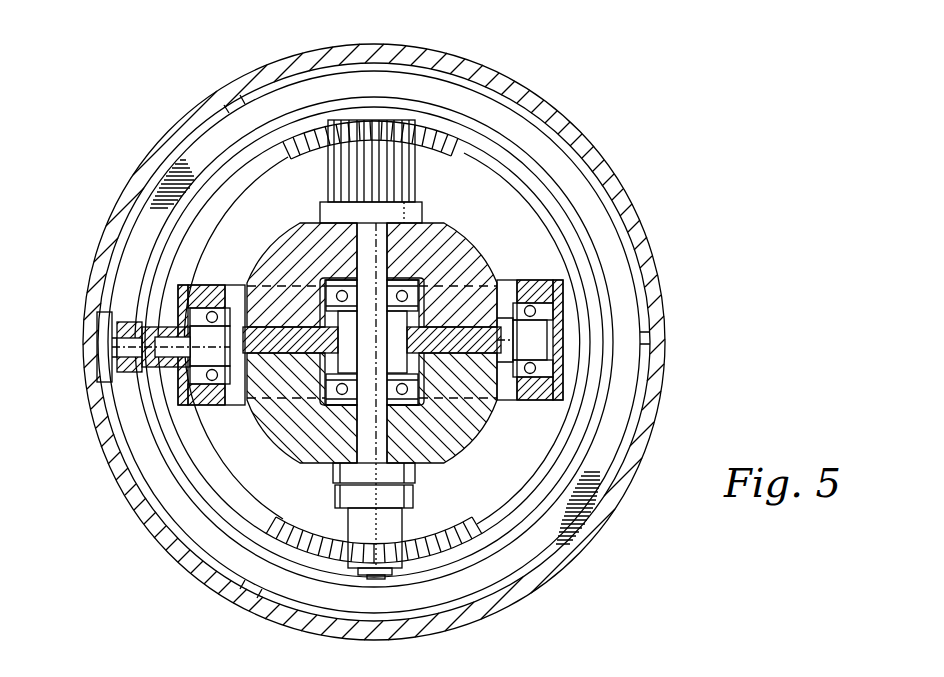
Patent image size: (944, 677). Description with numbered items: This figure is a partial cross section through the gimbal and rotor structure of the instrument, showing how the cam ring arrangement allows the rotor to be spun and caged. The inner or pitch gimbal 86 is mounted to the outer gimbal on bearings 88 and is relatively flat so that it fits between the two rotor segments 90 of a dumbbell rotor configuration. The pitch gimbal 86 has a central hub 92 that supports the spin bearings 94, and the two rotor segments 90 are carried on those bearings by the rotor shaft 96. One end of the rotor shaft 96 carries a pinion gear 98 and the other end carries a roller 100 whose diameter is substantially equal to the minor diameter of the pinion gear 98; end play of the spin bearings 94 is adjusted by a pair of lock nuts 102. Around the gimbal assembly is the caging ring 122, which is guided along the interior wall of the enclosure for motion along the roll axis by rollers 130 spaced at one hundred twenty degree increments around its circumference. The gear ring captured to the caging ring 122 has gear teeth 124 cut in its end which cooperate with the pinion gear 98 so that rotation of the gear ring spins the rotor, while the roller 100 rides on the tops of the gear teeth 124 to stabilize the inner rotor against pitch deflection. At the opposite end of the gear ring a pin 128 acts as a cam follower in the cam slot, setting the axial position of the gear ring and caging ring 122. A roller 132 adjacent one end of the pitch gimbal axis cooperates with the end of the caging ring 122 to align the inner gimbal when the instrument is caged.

The inner or pitch gimbal 86 is at (365, 432).
The bearings 88 is at (214, 312).
The rotor segments 90 is at (460, 252).
The central hub 92 is at (283, 408).
The spin bearings 94 is at (340, 290).
The rotor shaft 96 is at (480, 395).
The pinion gear 98 is at (387, 130).
The roller 100 is at (390, 538).
The lock nuts 102 is at (345, 496).
The caging ring 122 is at (165, 456).
The gear teeth 124 is at (437, 130).
The pin 128 is at (100, 326).
The rollers 130 is at (237, 100).
The roller 132 is at (130, 373).